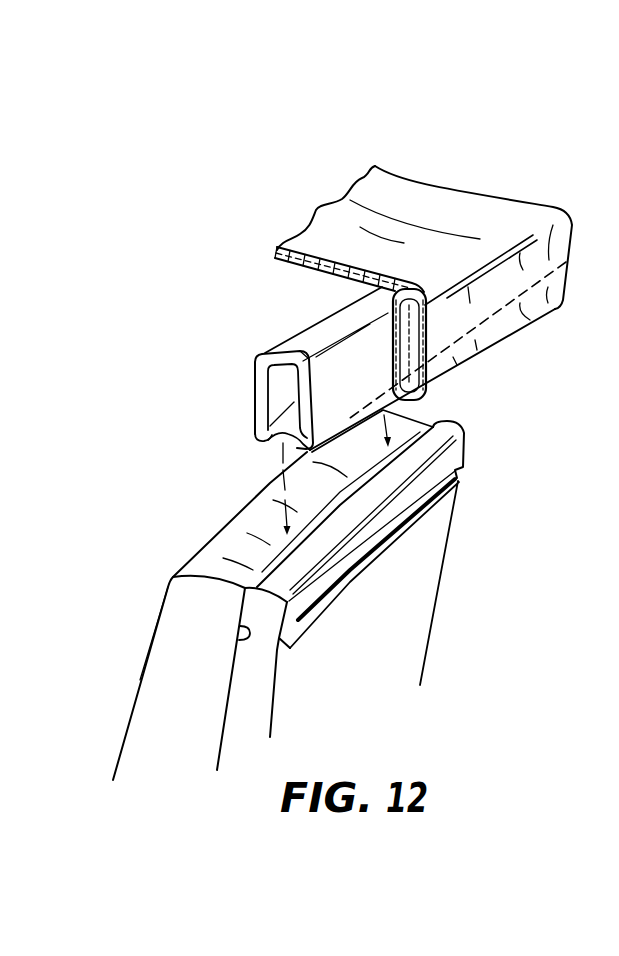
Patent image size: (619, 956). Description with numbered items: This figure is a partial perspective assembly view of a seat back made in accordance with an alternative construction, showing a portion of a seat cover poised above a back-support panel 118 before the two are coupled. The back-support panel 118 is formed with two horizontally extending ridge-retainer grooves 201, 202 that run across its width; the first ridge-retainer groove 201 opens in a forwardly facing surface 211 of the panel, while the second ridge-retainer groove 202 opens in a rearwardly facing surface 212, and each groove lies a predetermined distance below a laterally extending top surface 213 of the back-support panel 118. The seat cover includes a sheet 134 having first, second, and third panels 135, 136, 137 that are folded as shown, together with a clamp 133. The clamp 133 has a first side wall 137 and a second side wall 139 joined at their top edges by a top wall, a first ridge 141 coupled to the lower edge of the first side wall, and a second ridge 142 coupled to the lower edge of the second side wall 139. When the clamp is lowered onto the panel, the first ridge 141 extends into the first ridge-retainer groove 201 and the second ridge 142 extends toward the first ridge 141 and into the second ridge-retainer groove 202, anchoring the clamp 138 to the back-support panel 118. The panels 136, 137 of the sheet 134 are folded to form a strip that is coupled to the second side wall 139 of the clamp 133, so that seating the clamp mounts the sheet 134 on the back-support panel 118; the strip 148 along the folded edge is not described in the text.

The back-support panel 118 is at (370, 656).
The clamp 133 is at (248, 368).
The sheet 134 is at (506, 185).
The first panel 135 is at (410, 215).
The second panel 136 is at (506, 327).
The third panel 137 is at (390, 357).
The clamp 138 is at (253, 390).
The second side wall 139 is at (345, 362).
The first ridge 141 is at (268, 441).
The second ridge 142 is at (278, 448).
The gasket strip 148 is at (322, 330).
The first ridge-retainer groove 201 is at (230, 632).
The second ridge-retainer groove 202 is at (432, 511).
The forwardly facing surface 211 is at (227, 717).
The rearwardly facing surface 212 is at (412, 592).
The top surface 213 is at (443, 428).